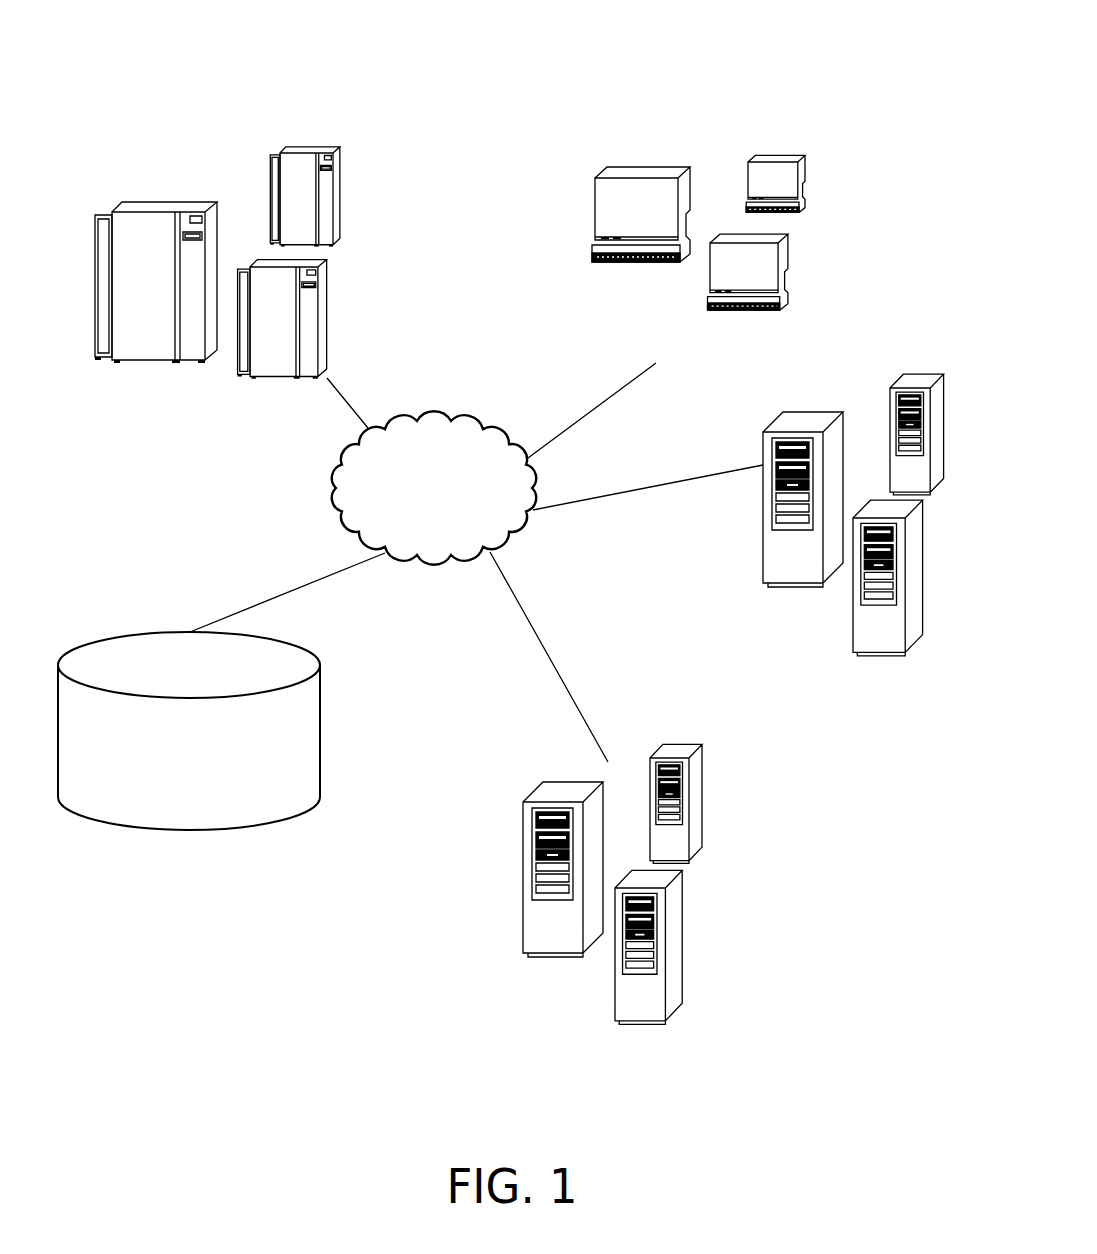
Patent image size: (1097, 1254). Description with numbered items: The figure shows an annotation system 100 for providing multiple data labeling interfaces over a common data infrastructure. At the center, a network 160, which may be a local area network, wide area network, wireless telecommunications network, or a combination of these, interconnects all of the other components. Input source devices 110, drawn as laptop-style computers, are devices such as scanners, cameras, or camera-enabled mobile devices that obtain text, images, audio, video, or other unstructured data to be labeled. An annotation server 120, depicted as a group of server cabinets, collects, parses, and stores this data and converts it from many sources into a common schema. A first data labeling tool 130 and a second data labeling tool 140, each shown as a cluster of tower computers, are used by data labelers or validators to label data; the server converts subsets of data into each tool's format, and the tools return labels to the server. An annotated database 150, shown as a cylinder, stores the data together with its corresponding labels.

The annotation system 100 is at (743, 70).
The input source device 110 is at (778, 245).
The annotation server 120 is at (340, 200).
The first data labeling tool 130 is at (847, 390).
The second data labeling tool 140 is at (523, 893).
The annotated database 150 is at (322, 732).
The network 160 is at (433, 563).